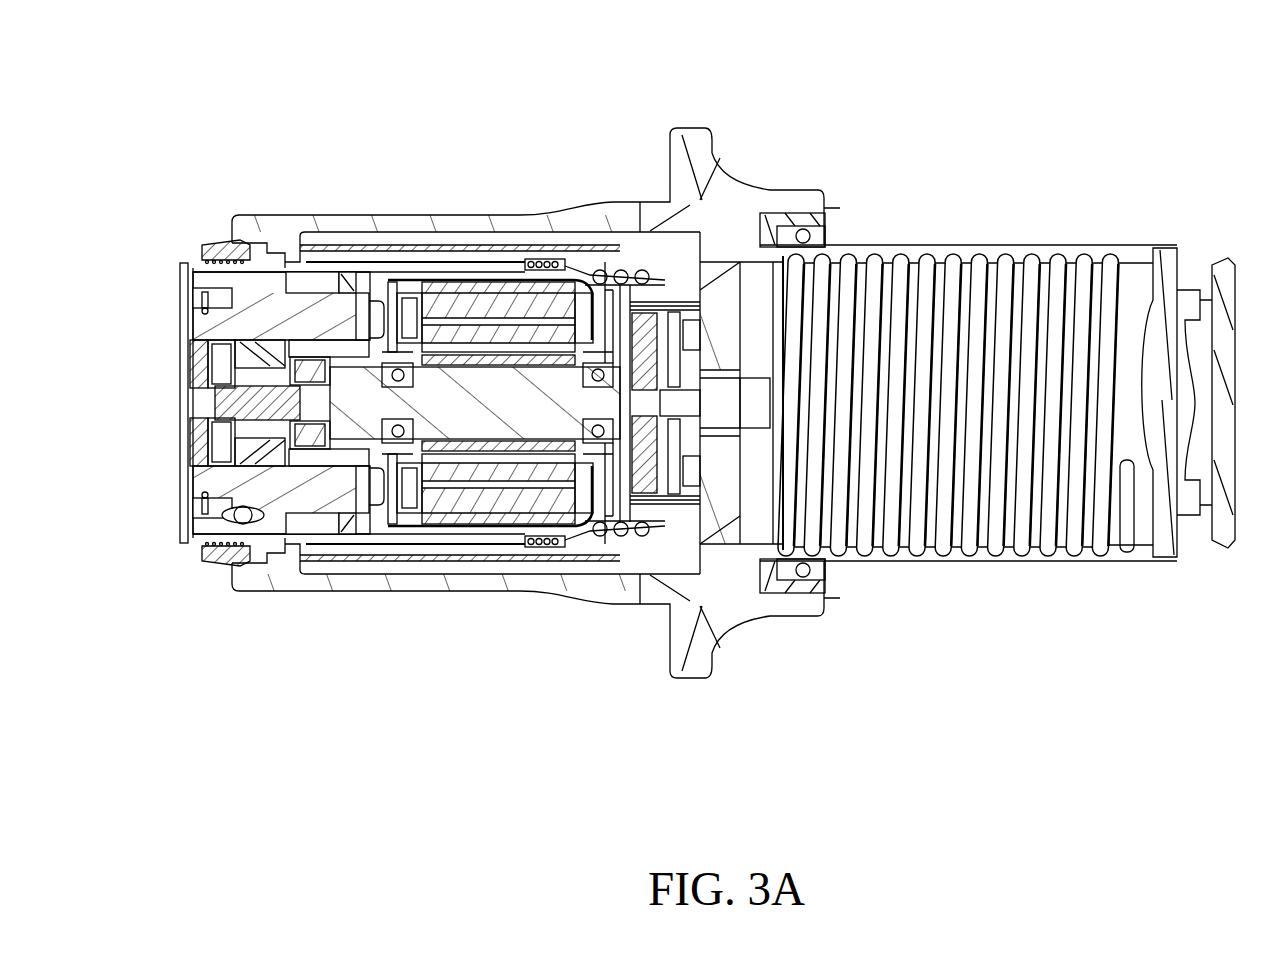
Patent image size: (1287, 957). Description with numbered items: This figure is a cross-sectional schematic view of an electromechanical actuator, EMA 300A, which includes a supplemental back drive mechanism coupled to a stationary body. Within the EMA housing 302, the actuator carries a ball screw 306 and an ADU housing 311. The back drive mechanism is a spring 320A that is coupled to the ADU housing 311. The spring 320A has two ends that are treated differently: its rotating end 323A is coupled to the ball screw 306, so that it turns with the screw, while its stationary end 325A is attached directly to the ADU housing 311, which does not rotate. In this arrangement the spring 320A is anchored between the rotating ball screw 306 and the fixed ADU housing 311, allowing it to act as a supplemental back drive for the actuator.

The EMA 300A is at (322, 100).
The EMA housing 302 is at (772, 620).
The ball screw 306 is at (612, 594).
The ADU housing 311 is at (432, 540).
The spring 320A is at (525, 259).
The rotating end 323A is at (563, 268).
The stationary end 325A is at (524, 547).